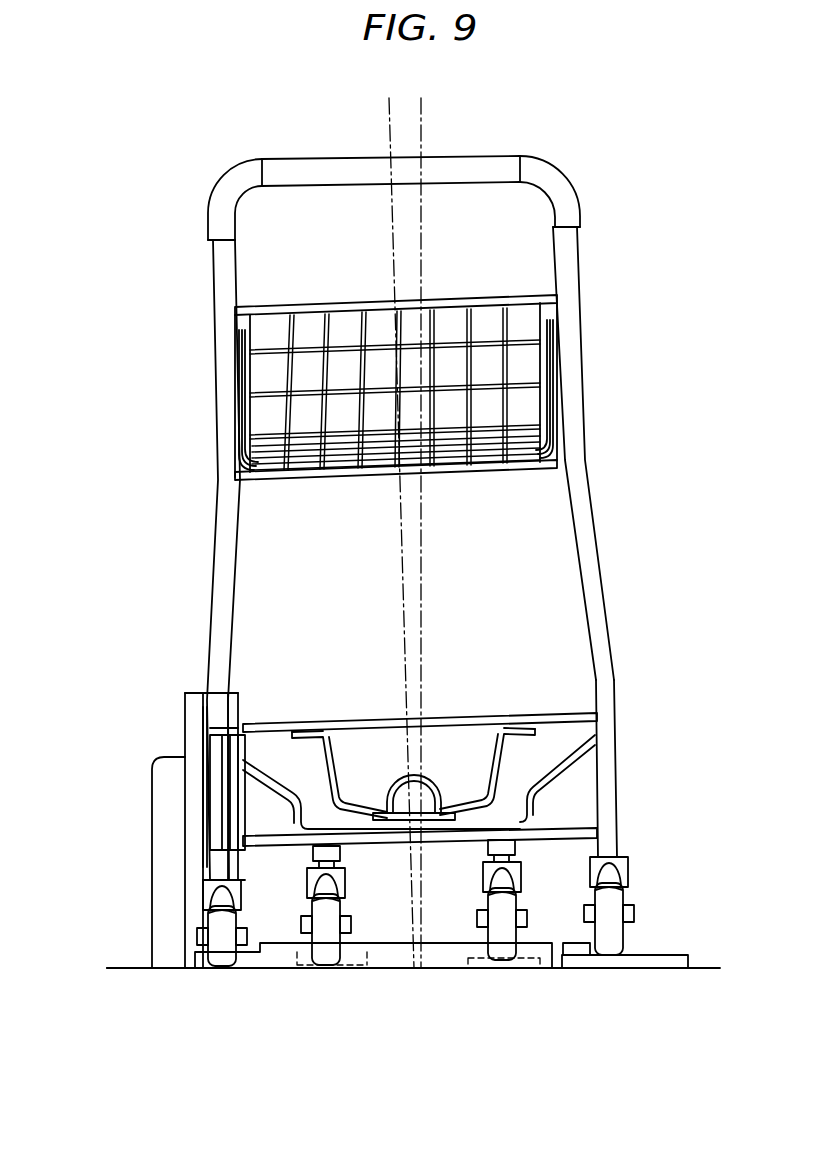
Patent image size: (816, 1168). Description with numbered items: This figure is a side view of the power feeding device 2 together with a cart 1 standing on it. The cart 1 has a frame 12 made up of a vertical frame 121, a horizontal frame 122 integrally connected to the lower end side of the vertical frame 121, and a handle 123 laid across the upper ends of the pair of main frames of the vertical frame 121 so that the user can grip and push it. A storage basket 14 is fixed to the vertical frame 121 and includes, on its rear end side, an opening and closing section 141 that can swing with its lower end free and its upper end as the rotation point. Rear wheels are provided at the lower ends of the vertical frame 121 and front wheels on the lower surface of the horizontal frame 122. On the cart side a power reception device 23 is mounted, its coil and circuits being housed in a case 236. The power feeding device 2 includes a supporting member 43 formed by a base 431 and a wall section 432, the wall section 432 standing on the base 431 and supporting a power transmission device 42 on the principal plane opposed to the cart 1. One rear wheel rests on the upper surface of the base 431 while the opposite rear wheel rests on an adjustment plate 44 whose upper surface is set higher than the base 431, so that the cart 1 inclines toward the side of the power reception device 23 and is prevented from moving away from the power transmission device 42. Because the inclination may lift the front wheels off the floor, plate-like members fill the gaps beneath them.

The cart 1 is at (637, 184).
The power feeding device 2 is at (432, 1008).
The frame 12 is at (590, 490).
The storage basket 14 is at (558, 325).
The power reception device 23 is at (212, 742).
The power transmission device 42 is at (208, 728).
The supporting member 43 is at (152, 840).
The adjustment plate 44 is at (690, 960).
The vertical frame 121 is at (620, 745).
The horizontal frame 122 is at (532, 805).
The handle 123 is at (475, 163).
The opening and closing section 141 is at (545, 300).
The case 236 is at (216, 795).
The base 431 is at (120, 967).
The wall section 432 is at (165, 882).